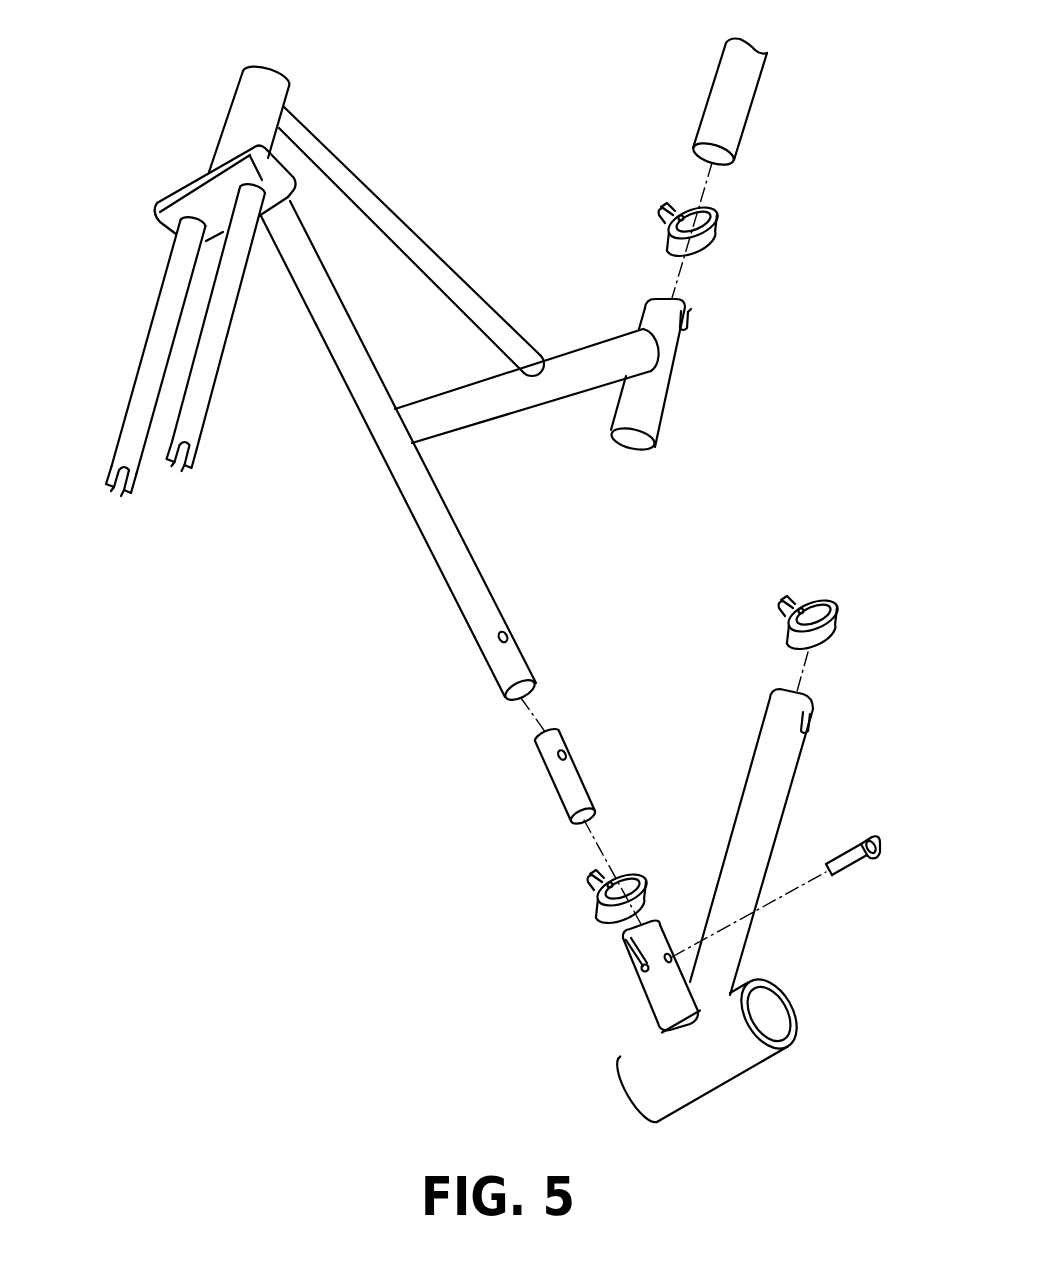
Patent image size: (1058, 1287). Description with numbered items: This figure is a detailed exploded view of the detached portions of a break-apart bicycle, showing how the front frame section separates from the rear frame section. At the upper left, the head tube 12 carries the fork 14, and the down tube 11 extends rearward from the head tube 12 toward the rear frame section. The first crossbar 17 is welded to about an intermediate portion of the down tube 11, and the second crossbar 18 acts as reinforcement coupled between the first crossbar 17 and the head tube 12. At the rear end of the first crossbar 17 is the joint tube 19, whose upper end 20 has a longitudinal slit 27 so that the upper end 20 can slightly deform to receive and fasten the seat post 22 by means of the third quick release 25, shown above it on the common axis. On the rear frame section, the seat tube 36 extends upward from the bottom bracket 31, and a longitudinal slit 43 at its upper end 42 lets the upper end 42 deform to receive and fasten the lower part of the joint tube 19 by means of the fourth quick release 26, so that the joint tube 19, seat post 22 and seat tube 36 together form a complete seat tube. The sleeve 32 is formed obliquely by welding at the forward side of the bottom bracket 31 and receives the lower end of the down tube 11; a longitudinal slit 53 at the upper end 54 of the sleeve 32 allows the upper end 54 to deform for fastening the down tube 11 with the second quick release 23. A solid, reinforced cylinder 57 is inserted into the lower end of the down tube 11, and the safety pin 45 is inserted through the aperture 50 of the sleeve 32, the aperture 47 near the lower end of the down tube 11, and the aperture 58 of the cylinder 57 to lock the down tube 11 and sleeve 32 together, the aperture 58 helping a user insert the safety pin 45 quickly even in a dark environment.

The down tube 11 is at (427, 452).
The head tube 12 is at (250, 105).
The fork 14 is at (150, 360).
The first crossbar 17 is at (500, 410).
The second crossbar 18 is at (400, 225).
The joint tube 19 is at (663, 383).
The upper end 20 is at (709, 360).
The seat post 22 is at (740, 95).
The second quick release 23 is at (600, 888).
The third quick release 25 is at (708, 225).
The fourth quick release 26 is at (836, 600).
The longitudinal slit 27 is at (690, 320).
The bottom bracket 31 is at (733, 1063).
The sleeve 32 is at (597, 959).
The seat tube 36 is at (810, 819).
The upper end 42 is at (803, 698).
The longitudinal slit 43 is at (813, 720).
The safety pin 45 is at (852, 847).
The aperture 47 is at (510, 638).
The aperture 50 is at (672, 957).
The longitudinal slit 53 is at (627, 953).
The upper end 54 is at (625, 930).
The solid, reinforced cylinder 57 is at (607, 767).
The aperture 58 is at (568, 752).